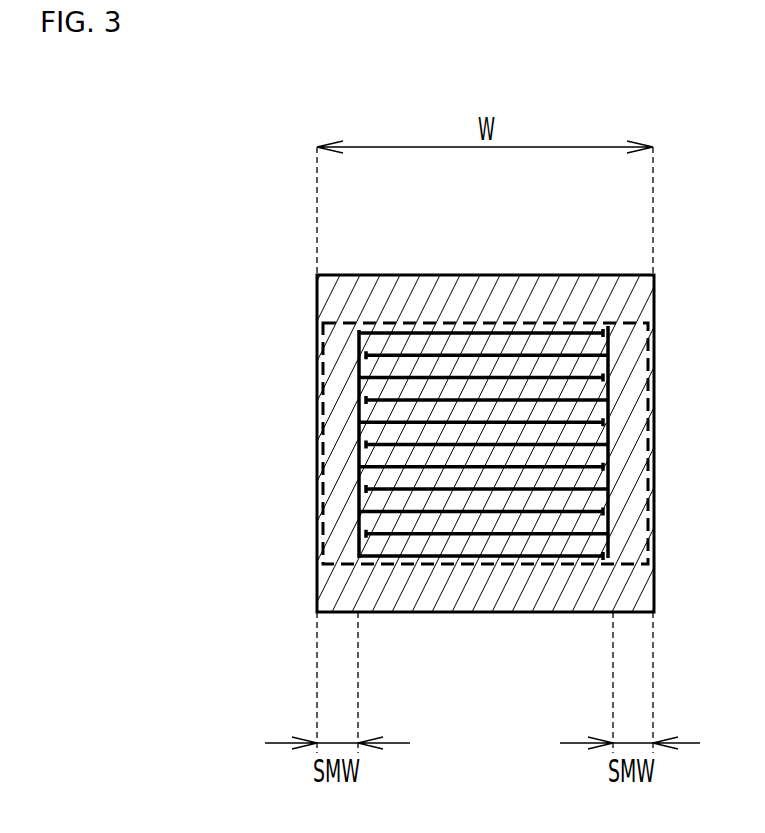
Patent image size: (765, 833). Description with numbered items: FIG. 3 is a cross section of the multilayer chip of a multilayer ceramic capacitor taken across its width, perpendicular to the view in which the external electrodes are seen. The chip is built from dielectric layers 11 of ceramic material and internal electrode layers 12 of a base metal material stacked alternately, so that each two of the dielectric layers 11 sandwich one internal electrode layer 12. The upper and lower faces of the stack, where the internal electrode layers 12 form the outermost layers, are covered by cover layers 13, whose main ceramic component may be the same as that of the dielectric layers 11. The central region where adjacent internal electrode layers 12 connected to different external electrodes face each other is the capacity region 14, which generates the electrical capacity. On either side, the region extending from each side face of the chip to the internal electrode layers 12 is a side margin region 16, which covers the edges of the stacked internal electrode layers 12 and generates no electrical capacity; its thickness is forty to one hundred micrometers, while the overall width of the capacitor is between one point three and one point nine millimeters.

The dielectric layer 11 is at (555, 520).
The internal electrode layer 12 is at (450, 490).
The cover layer 13 is at (432, 296).
The capacity region 14 is at (498, 323).
The side margin region 16 is at (347, 322).